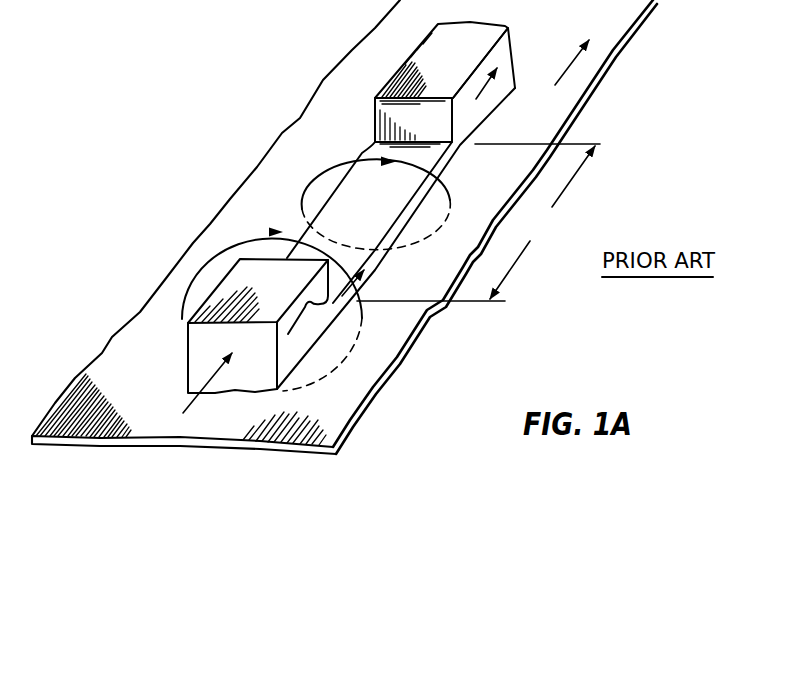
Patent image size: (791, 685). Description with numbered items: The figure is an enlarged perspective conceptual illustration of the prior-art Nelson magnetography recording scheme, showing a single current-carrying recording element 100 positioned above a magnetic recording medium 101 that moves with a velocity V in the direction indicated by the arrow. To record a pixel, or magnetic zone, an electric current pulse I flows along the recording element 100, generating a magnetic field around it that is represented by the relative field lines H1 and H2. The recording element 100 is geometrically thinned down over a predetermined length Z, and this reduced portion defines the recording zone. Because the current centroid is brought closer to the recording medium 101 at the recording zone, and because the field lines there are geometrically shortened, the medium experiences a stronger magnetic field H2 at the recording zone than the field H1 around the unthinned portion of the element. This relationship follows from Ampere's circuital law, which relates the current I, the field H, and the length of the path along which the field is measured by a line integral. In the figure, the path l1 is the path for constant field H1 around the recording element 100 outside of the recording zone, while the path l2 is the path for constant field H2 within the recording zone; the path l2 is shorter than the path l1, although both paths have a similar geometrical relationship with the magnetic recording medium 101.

The recording element 100 is at (380, 212).
The magnetic recording medium 101 is at (570, 93).
The magnetic field H1 is at (228, 238).
The magnetic field H2 is at (322, 173).
The path l1 is at (360, 302).
The path l2 is at (444, 184).
The length Z is at (542, 222).
The velocity V is at (568, 62).
The electric current pulse I is at (340, 246).